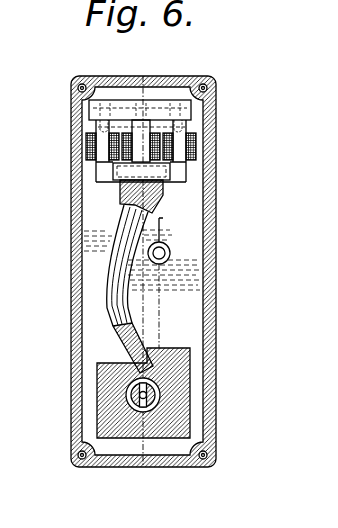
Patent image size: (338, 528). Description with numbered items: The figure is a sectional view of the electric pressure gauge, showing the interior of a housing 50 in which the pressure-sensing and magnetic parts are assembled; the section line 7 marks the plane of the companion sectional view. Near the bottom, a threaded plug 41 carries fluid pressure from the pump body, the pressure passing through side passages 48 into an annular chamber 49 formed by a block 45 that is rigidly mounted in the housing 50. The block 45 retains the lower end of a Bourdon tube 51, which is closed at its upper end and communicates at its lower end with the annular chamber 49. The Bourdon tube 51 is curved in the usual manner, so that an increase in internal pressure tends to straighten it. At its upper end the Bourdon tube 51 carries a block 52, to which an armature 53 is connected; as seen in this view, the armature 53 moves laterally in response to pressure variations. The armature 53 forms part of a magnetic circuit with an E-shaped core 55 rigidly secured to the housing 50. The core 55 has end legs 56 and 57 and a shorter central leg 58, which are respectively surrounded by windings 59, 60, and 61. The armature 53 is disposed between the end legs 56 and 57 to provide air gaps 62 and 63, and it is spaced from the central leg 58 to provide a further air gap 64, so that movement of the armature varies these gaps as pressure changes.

The section line 7- 7 is at (124, 68).
The plug 41 is at (128, 406).
The block 45 is at (183, 380).
The side passages 48 is at (128, 391).
The annular chamber 49 is at (160, 397).
The housing 50 is at (207, 330).
The Bourdon tube 51 is at (115, 333).
The block 52 is at (159, 207).
The armature 53 is at (120, 182).
The E-shaped core 55 is at (160, 118).
The end leg 56 is at (98, 164).
The end leg 57 is at (185, 164).
The central leg 58 is at (142, 152).
The winding 59 is at (88, 143).
The winding 60 is at (194, 143).
The winding 61 is at (160, 128).
The air gap 62 is at (118, 170).
The air gap 63 is at (171, 179).
The air gap 64 is at (153, 192).